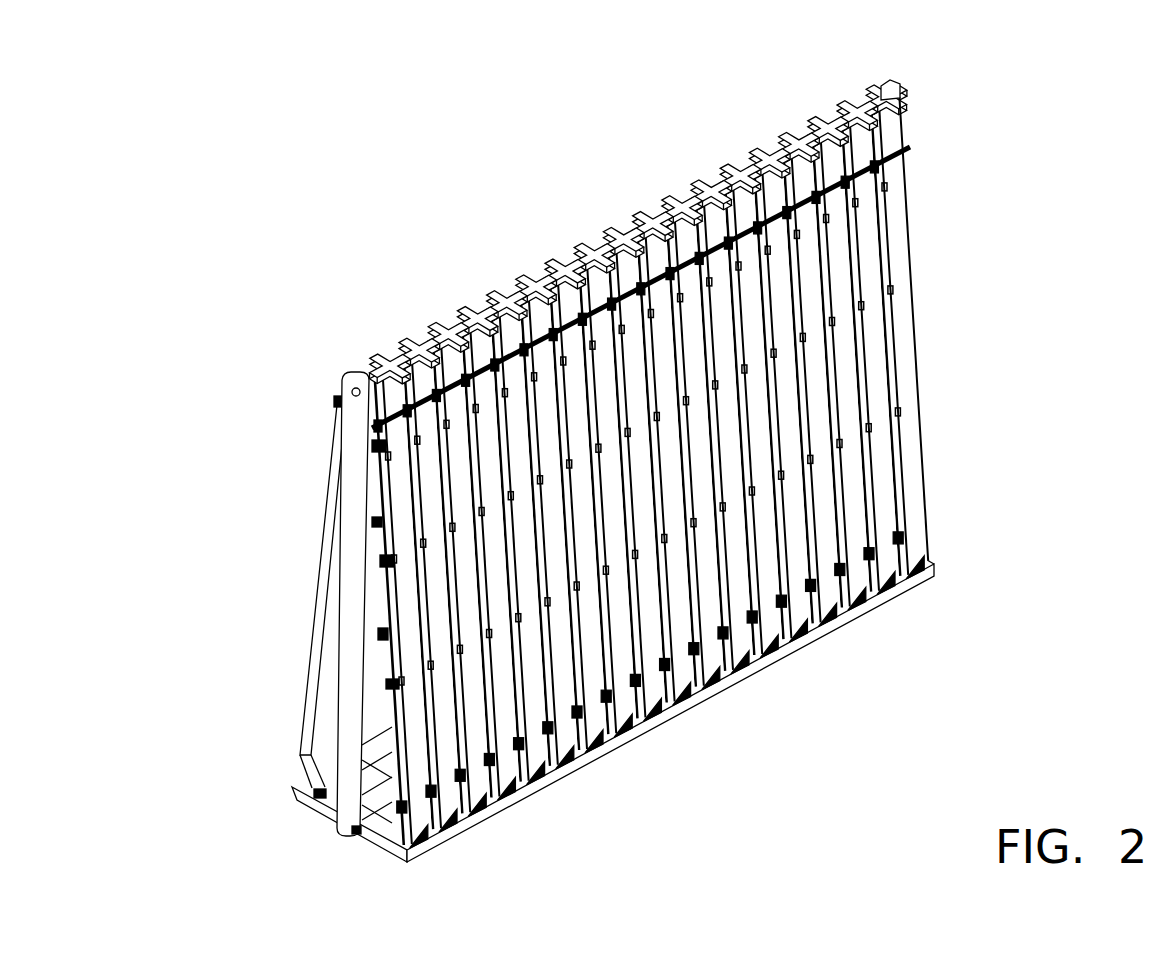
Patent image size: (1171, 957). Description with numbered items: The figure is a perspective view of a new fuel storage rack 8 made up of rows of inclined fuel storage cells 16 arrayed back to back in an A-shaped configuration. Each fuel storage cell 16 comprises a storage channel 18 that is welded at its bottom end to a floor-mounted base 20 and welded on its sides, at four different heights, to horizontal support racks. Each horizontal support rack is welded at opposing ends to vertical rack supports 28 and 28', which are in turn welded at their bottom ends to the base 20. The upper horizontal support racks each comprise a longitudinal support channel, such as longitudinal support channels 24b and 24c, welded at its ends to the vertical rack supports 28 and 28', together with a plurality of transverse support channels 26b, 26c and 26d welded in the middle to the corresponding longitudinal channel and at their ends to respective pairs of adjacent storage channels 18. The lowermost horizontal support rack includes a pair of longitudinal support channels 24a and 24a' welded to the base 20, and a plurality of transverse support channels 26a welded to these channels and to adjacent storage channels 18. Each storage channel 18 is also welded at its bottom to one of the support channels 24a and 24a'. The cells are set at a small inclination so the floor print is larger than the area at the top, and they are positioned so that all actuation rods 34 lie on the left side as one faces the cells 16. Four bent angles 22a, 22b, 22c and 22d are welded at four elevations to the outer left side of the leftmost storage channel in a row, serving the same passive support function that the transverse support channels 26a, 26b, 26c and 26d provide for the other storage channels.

The new fuel storage rack 8 is at (342, 232).
The fuel storage cell 16 is at (800, 112).
The storage channel 18 is at (372, 403).
The floor-mounted base 20 is at (292, 798).
The bent angle 22a is at (437, 836).
The bent angle 22b is at (388, 686).
The bent angle 22c is at (380, 562).
The bent angle 22d is at (377, 448).
The longitudinal support channel 24a is at (270, 780).
The longitudinal support channel 24a' is at (321, 846).
The longitudinal support channel 24b is at (378, 636).
The longitudinal support channel 24c is at (372, 522).
The transverse support channel 26a is at (842, 565).
The transverse support channel 26b is at (838, 440).
The transverse support channel 26c is at (840, 335).
The transverse support channel 26d is at (837, 224).
The vertical rack support 28 is at (317, 604).
The vertical rack support 28' is at (933, 75).
The actuation rod 34 is at (352, 484).